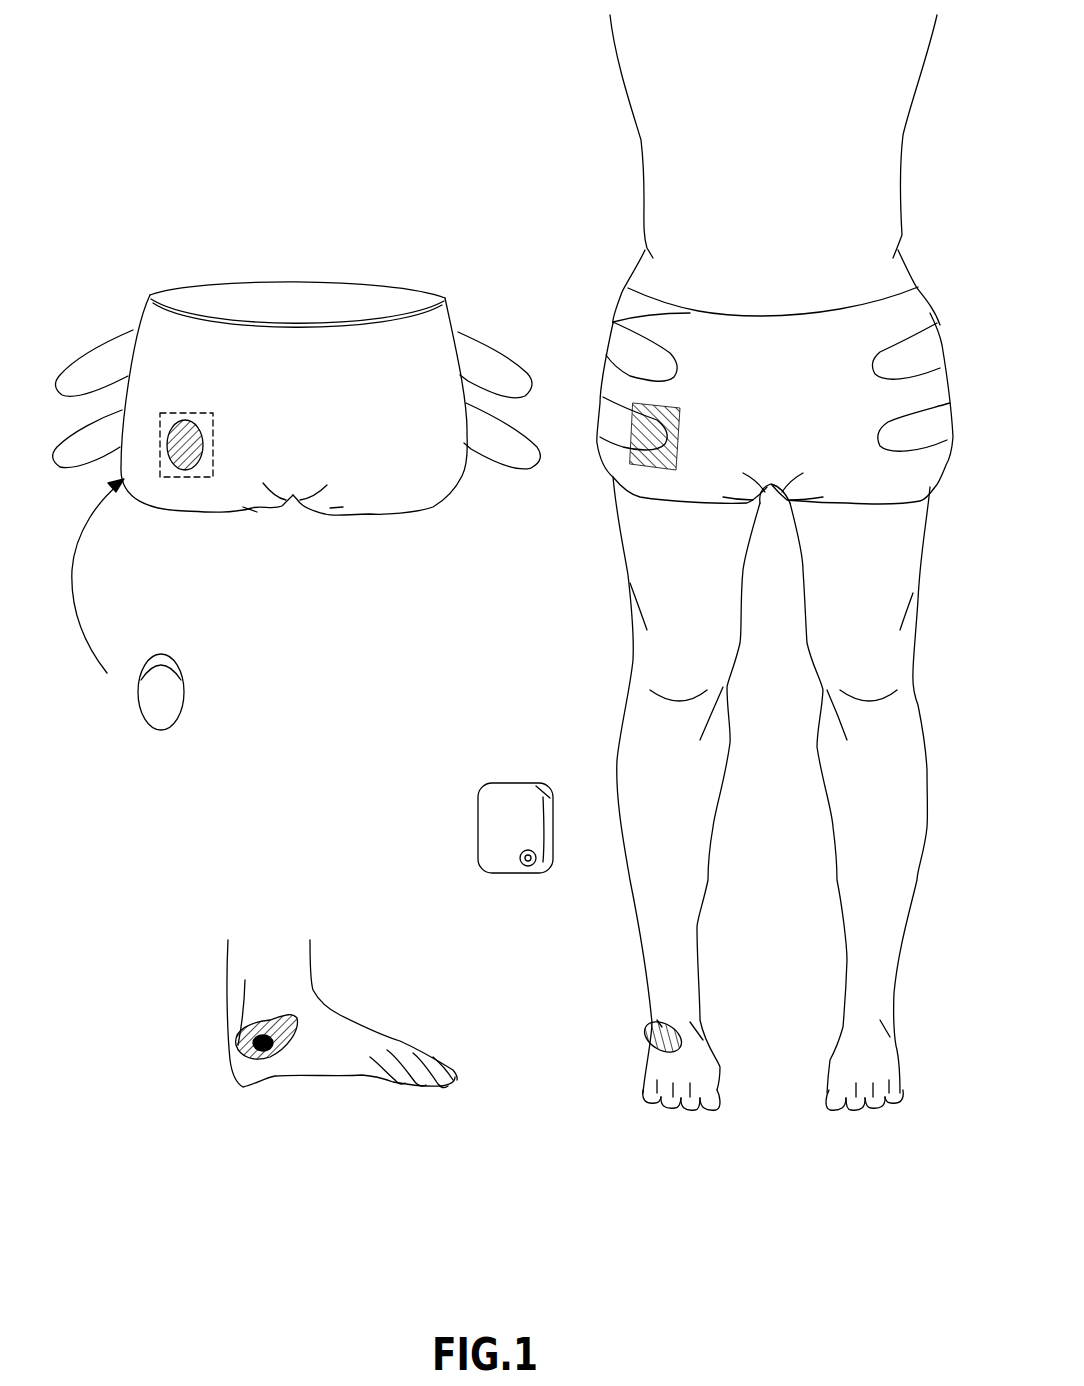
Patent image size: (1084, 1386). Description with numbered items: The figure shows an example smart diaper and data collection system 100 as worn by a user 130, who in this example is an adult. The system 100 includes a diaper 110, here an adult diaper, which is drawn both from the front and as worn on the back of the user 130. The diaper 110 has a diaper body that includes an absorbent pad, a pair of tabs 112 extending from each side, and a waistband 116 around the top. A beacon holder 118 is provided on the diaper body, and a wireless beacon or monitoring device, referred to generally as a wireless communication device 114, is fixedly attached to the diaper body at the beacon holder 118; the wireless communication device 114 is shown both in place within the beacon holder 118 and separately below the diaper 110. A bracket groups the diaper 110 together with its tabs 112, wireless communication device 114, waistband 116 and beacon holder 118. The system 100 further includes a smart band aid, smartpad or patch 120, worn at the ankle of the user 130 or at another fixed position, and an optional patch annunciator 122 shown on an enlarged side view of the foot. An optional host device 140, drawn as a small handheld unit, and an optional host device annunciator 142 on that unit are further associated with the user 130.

The smart diaper and data collection system 100 is at (297, 63).
The diaper 110 is at (442, 733).
The tabs 112 is at (497, 367).
The wireless communication device 114 is at (160, 478).
The waistband 116 is at (158, 290).
The beacon holder 118 is at (660, 463).
The patch 120 is at (647, 1028).
The patch annunciator 122 is at (243, 1087).
The user 130 is at (683, 133).
The host device 140 is at (537, 783).
The host device annunciator 142 is at (530, 865).